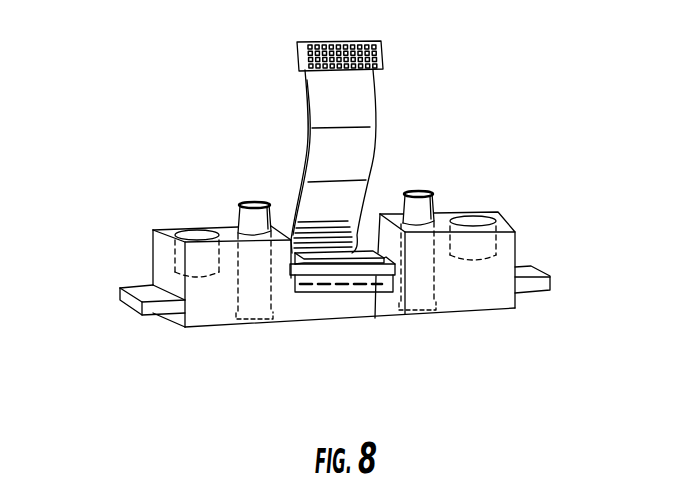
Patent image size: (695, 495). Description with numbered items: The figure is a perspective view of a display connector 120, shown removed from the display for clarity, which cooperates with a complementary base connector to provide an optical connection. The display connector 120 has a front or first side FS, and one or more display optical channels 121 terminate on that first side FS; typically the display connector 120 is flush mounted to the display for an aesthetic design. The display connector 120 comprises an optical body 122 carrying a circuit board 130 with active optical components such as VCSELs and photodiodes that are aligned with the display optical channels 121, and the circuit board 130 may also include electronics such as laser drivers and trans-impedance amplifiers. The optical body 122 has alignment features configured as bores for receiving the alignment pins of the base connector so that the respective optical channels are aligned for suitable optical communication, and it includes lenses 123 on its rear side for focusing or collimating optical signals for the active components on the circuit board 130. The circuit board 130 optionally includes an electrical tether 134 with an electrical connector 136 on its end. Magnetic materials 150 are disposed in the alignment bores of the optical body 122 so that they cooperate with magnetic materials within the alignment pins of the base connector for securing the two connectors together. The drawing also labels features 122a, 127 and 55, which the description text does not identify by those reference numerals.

The display connector 120 is at (527, 118).
The display optical channels 121 is at (320, 323).
The optical body 122 is at (226, 310).
The mounting tab 122a is at (140, 296).
The lenses 123 is at (337, 283).
The pins 127 is at (252, 201).
The circuit board 130 is at (365, 278).
The electrical tether 134 is at (313, 142).
The electrical connector 136 is at (301, 52).
The magnetic materials 150 is at (196, 232).
The conductor pin 55 is at (399, 203).
The first side FS is at (500, 311).